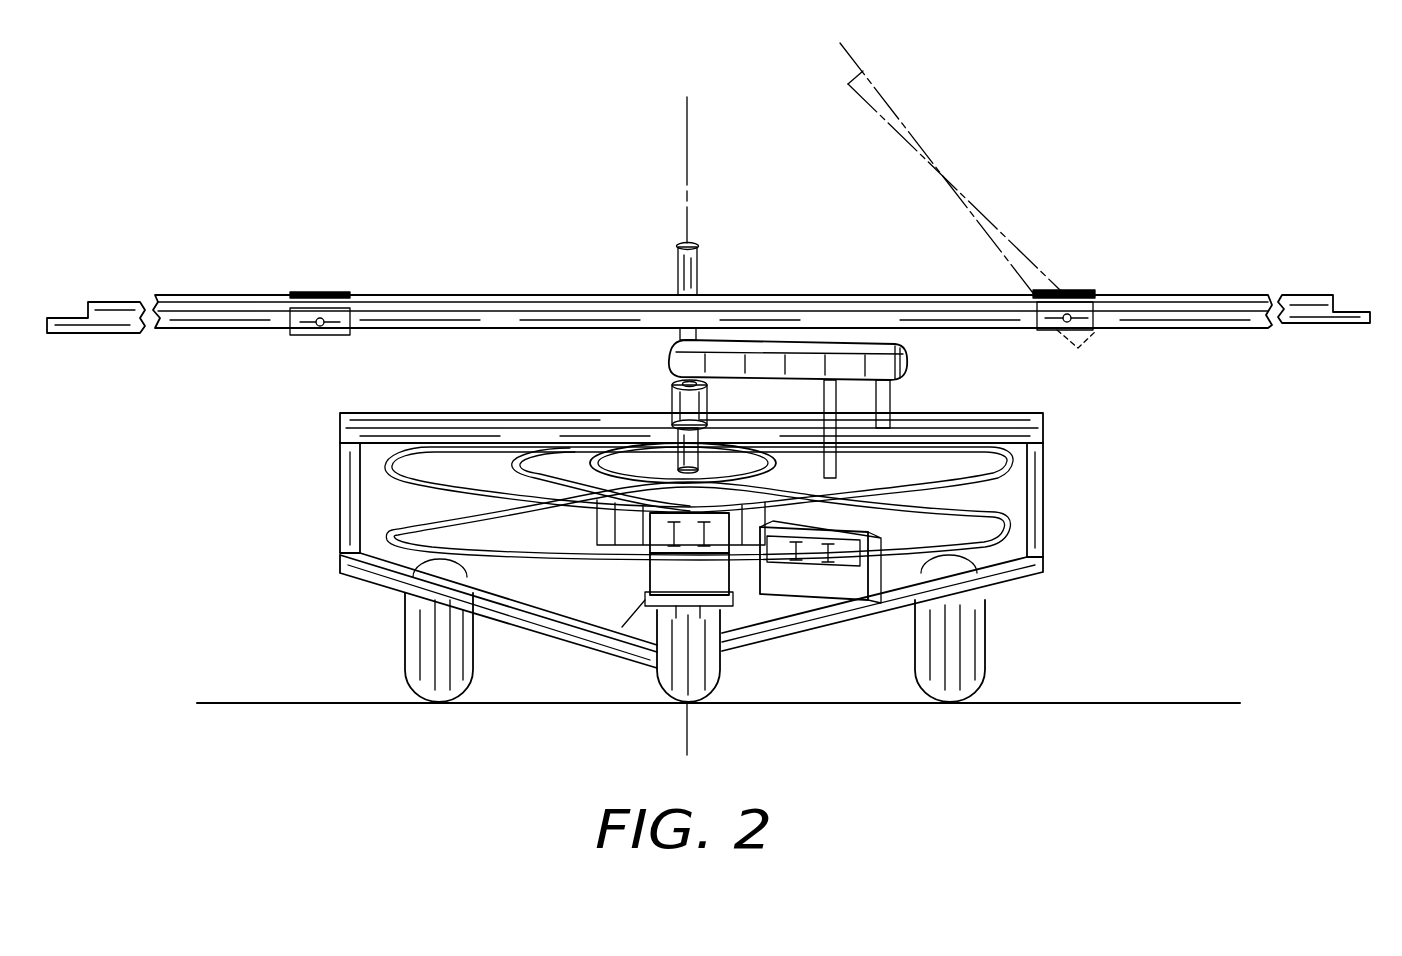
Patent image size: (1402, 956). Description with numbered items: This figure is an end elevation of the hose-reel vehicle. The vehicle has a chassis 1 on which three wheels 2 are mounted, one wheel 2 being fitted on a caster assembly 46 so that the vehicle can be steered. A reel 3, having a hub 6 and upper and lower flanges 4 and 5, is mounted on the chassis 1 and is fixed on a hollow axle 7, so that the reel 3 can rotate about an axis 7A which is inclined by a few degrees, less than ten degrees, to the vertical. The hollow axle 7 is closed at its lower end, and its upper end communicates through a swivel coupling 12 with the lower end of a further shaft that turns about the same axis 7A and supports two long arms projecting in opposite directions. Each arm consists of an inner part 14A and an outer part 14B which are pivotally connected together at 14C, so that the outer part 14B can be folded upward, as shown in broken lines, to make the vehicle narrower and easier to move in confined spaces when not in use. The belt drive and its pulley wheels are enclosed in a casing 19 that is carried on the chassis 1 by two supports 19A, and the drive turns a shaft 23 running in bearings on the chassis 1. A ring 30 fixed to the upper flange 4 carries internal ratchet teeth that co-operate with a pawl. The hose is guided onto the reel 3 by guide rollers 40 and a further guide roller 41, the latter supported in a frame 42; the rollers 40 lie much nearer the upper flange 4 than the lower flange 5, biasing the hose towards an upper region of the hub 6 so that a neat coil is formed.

The chassis 1 is at (678, 540).
The wheels 2 is at (420, 655).
The reel 3 is at (656, 466).
The upper flange 4 is at (1045, 460).
The lower flange 5 is at (995, 517).
The hub 6 is at (855, 470).
The hollow axle 7 is at (657, 452).
The axis 7A is at (688, 148).
The swivel coupling 12 is at (670, 400).
The inner part of arm 14A is at (1011, 329).
The outer part of arm 14B is at (968, 186).
The pivotal connection 14C is at (1065, 290).
The casing 19 is at (783, 340).
The supports 19A is at (880, 398).
The shaft 23 is at (865, 378).
The ring 30 is at (503, 467).
The guide rollers 40 is at (825, 555).
The guide roller 41 is at (648, 525).
The frame 42 is at (650, 596).
The caster assembly 46 is at (622, 627).